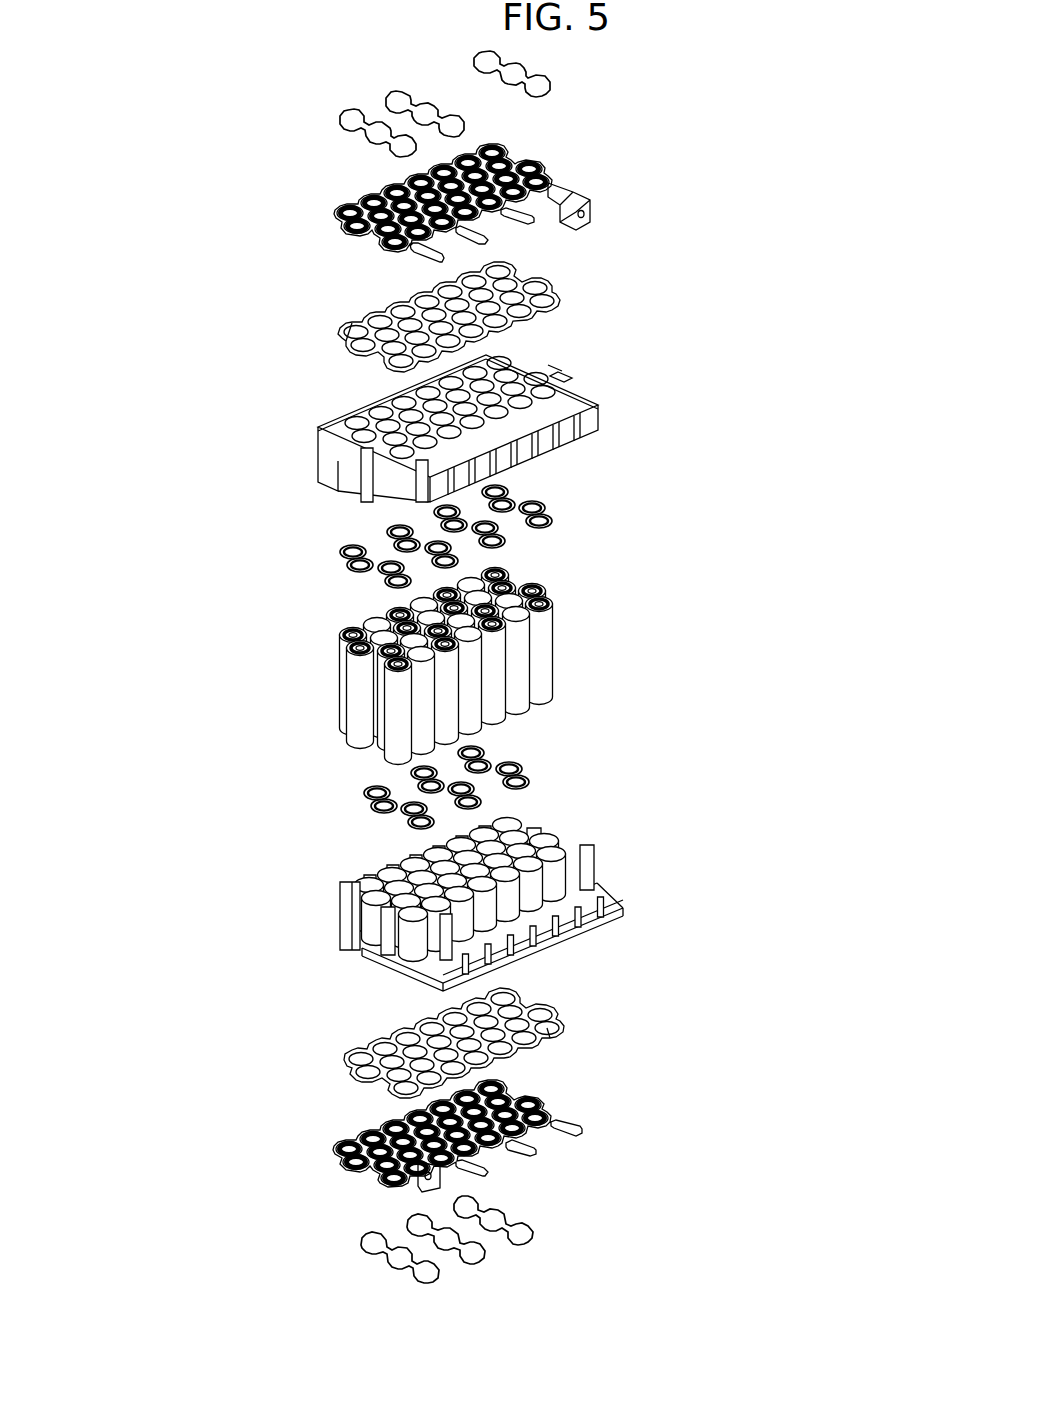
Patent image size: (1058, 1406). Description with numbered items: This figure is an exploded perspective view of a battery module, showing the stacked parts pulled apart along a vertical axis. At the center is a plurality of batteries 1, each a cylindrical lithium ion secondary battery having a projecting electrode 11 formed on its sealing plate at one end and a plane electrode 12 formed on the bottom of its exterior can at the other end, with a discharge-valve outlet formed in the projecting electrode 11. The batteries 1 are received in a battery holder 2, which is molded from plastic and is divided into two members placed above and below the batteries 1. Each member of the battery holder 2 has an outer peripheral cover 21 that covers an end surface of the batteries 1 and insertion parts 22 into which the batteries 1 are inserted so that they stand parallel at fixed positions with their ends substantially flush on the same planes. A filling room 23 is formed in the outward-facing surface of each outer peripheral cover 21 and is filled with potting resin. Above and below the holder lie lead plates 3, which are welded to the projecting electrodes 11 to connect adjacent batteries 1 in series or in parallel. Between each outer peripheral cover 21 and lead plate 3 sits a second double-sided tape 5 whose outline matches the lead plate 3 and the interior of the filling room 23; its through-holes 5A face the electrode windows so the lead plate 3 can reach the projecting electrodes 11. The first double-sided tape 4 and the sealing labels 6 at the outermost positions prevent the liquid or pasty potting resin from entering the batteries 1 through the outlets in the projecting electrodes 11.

The battery 1 is at (423, 660).
The battery holder 2 is at (472, 665).
The lead plate 3 is at (358, 207).
The first double-sided tape 4 is at (537, 500).
The second double-sided tape 5 is at (457, 667).
The through-hole 5A is at (363, 298).
The sealing label 6 is at (347, 130).
The projecting electrode 11 is at (347, 623).
The plane electrode 12 is at (373, 618).
The outer peripheral cover 21 is at (333, 423).
The insertion part 22 is at (335, 452).
The filling room 23 is at (405, 380).